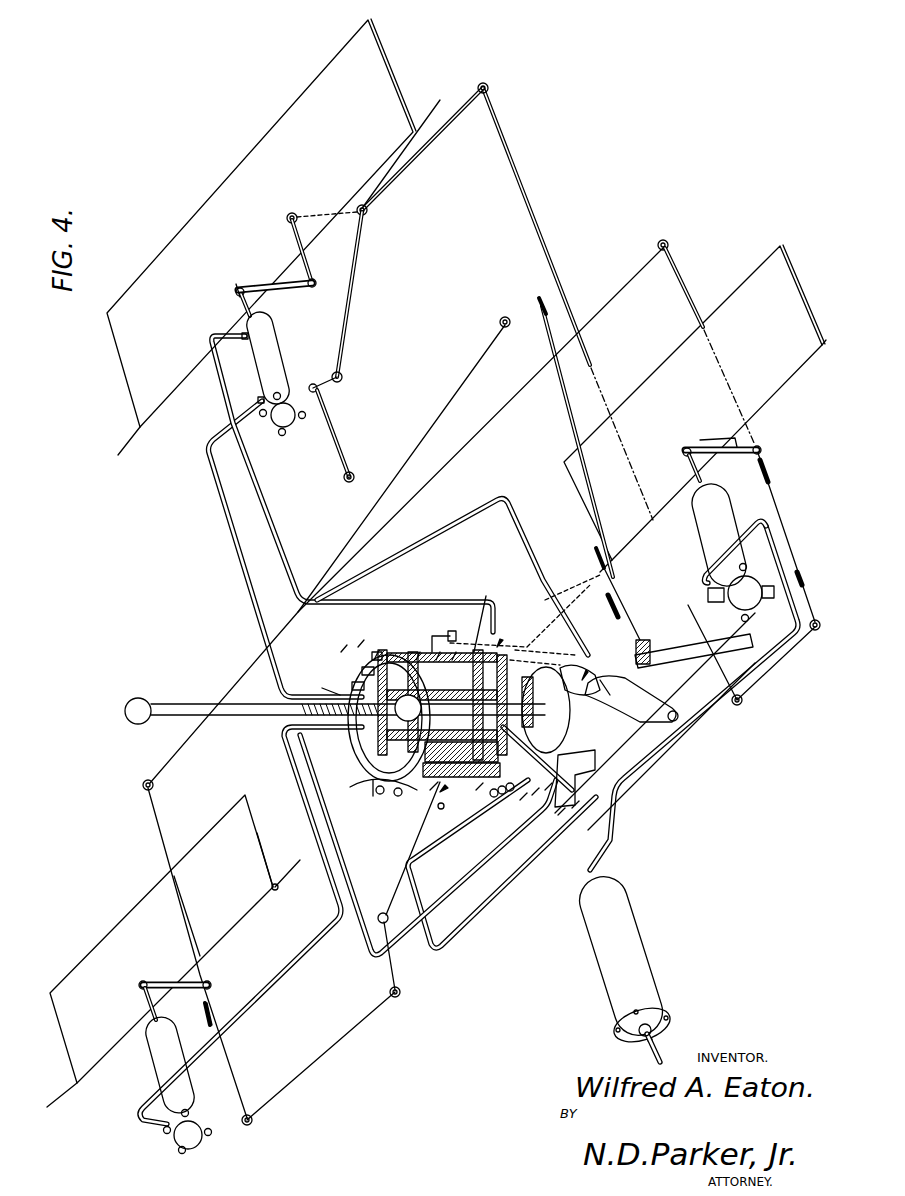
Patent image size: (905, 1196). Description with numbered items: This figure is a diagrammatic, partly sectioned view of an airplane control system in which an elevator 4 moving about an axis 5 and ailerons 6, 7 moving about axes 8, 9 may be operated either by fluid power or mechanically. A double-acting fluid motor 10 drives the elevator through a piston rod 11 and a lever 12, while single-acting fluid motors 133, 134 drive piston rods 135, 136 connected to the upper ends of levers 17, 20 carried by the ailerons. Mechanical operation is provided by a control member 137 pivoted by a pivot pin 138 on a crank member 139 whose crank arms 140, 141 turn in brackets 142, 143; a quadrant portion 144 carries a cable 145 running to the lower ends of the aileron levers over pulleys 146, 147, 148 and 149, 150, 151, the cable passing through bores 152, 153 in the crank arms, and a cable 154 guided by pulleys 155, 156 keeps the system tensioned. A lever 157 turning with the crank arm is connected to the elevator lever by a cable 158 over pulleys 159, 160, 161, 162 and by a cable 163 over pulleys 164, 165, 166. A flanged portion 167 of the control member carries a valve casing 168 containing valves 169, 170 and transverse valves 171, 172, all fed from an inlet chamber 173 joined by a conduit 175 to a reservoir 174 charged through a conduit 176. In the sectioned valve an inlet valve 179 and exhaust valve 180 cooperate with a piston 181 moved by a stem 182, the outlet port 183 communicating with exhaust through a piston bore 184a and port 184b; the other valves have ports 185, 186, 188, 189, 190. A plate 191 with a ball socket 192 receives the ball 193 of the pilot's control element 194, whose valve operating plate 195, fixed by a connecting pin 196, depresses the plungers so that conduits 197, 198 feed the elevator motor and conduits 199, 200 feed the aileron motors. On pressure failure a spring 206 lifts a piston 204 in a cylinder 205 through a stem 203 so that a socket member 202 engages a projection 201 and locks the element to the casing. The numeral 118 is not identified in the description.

The elevator 4 is at (183, 228).
The axis 5 is at (128, 448).
The aileron 6 is at (203, 838).
The aileron 7 is at (665, 375).
The axis 8 is at (290, 867).
The axis 9 is at (558, 590).
The double-acting fluid motor 10 is at (286, 325).
The piston rod 11 is at (238, 292).
The lever 12 is at (262, 283).
The lever 17 is at (164, 982).
The lever 20 is at (702, 442).
The port 118 is at (476, 790).
The single-acting fluid motor 133 is at (133, 1067).
The single-acting fluid motor 134 is at (710, 528).
The piston rod 135 is at (147, 1003).
The piston rod 136 is at (684, 460).
The control member 137 is at (567, 667).
The pivot pin 138 is at (676, 722).
The crank member 139 is at (636, 760).
The crank arm 140 is at (558, 815).
The crank arm 141 is at (683, 652).
The bracket 142 is at (532, 795).
The bracket 143 is at (748, 610).
The quadrant portion 144 is at (588, 672).
The cable 145 is at (600, 680).
The pulley 146 is at (700, 583).
The pulley 147 is at (732, 706).
The pulley 148 is at (817, 630).
The pulley 149 is at (377, 928).
The pulley 150 is at (370, 968).
The pulley 151 is at (252, 1100).
The bore 152 is at (545, 790).
The bore 153 is at (645, 556).
The cable 154 is at (160, 843).
The pulley 155 is at (145, 788).
The pulley 156 is at (662, 240).
The lever 157 is at (618, 558).
The cable 158 is at (560, 437).
The pulley 159 is at (504, 315).
The pulley 160 is at (349, 476).
The pulley 161 is at (318, 380).
The pulley 162 is at (326, 388).
The cable 163 is at (522, 208).
The pulley 164 is at (484, 84).
The pulley 165 is at (363, 212).
The pulley 166 is at (293, 214).
The flanged portion 167 is at (563, 740).
The control valve housing 168 is at (474, 652).
The control valve mechanism 169 is at (441, 810).
The control valve mechanism 170 is at (392, 650).
The valve 171 is at (345, 746).
The valve 172 is at (503, 640).
The inlet chamber 173 is at (586, 805).
The reservoir 174 is at (607, 970).
The conduit 175 is at (628, 780).
The conduit 176 is at (668, 1046).
The inlet valve 179 is at (572, 808).
The exhaust valve 180 is at (505, 810).
The piston 181 is at (404, 652).
The stem 182 is at (378, 790).
The outlet port 183 is at (520, 800).
The piston bore 184a is at (430, 790).
The port 184b is at (445, 785).
The outlet port 185 is at (395, 795).
The exhaust port 186 is at (345, 725).
The exhaust port 188 is at (378, 652).
The outlet port 189 is at (456, 652).
The exhaust port 190 is at (420, 652).
The plate 191 is at (375, 656).
The ball socket 192 is at (352, 686).
The ball 193 is at (365, 671).
The pilot's control element 194 is at (195, 703).
The valve operating plate 195 is at (322, 688).
The connecting pin 196 is at (362, 785).
The flexible conduit 197 is at (244, 572).
The flexible conduit 198 is at (264, 500).
The conduit 199 is at (712, 722).
The flexible conduit 200 is at (457, 521).
The projection 201 is at (347, 645).
The socket member 202 is at (364, 640).
The stem 203 is at (542, 650).
The piston 204 is at (557, 620).
The cylinder 205 is at (440, 652).
The spring 206 is at (576, 606).